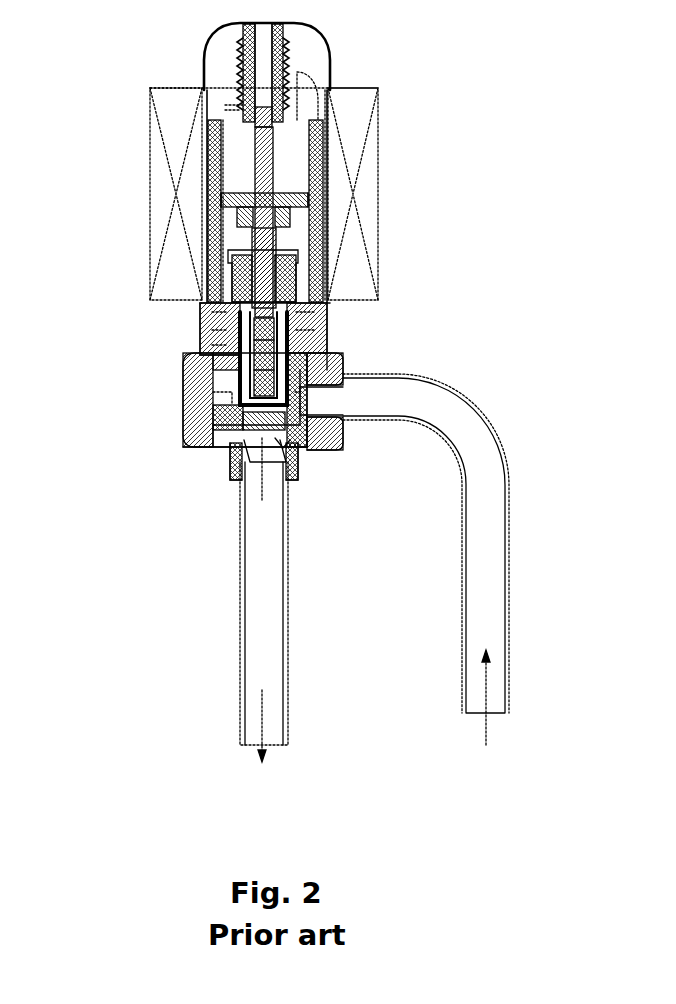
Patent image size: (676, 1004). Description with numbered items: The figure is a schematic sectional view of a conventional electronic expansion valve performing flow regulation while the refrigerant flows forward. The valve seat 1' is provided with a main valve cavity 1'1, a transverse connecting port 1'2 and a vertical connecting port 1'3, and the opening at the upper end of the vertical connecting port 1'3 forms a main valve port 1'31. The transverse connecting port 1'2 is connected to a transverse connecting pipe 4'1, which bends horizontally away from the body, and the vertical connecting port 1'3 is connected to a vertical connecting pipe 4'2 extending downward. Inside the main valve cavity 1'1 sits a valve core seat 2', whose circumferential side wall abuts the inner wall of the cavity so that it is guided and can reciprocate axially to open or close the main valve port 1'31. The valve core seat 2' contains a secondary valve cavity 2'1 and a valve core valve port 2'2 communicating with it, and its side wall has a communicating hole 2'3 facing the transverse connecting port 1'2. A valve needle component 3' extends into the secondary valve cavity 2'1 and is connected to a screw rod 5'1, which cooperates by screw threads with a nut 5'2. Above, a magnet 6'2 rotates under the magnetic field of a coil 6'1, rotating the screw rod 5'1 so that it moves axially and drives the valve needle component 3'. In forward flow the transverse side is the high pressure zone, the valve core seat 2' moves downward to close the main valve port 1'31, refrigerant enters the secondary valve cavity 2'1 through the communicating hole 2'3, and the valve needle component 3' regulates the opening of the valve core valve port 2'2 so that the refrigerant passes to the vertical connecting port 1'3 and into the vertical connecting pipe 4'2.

The coil 6'1 is at (200, 194).
The magnet 6'2 is at (175, 163).
The screw rod 5'1 is at (164, 255).
The nut 5'2 is at (153, 268).
The valve needle component 3' is at (209, 336).
The secondary valve cavity 2'1 is at (349, 351).
The valve core seat 2' is at (375, 361).
The communicating hole 2'3 is at (351, 398).
The valve seat 1' is at (202, 398).
The main valve cavity 1'1 is at (195, 411).
The transverse connecting port 1'2 is at (362, 458).
The main valve port 1'31 is at (199, 469).
The vertical connecting port 1'3 is at (209, 489).
The valve core valve port 2'2 is at (345, 490).
The vertical connecting pipe 4'2 is at (204, 612).
The transverse connecting pipe 4'1 is at (470, 559).